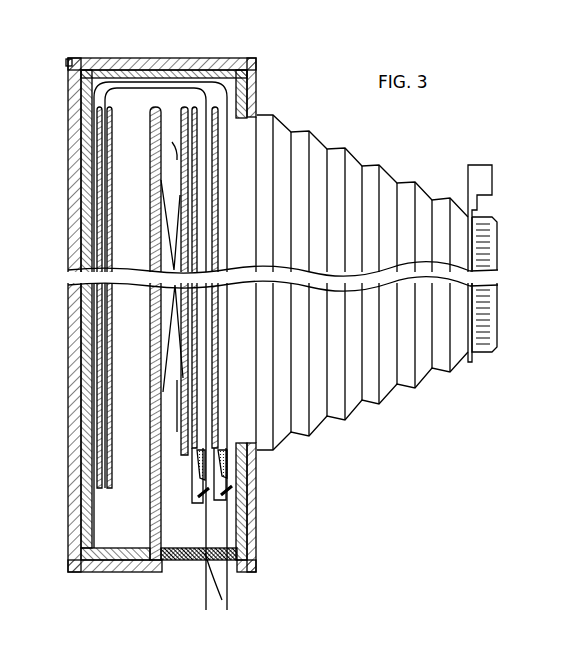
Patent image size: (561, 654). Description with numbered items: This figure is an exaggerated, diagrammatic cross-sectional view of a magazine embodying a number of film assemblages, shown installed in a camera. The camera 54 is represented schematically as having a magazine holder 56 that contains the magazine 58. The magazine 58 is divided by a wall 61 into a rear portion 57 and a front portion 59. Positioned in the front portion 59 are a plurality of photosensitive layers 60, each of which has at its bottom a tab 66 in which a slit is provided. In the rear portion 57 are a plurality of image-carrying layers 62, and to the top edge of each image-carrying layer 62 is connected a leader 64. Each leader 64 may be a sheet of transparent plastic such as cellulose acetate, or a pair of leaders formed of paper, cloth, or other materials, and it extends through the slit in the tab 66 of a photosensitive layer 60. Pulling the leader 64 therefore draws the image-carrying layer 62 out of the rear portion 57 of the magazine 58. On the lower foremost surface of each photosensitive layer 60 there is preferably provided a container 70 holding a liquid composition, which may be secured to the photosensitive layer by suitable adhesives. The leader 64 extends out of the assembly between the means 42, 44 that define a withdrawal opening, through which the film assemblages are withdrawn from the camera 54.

The means defining a withdrawal opening 42 is at (193, 553).
The means defining a withdrawal opening 44 is at (198, 550).
The camera 54 is at (405, 378).
The magazine holder 56 is at (257, 516).
The rear portion 57 is at (126, 187).
The magazine 58 is at (85, 318).
The front portion 59 is at (171, 100).
The photosensitive layers 60 is at (193, 203).
The wall 61 is at (150, 134).
The image-carrying layers 62 is at (101, 238).
The leader 64 is at (200, 157).
The tab 66 is at (232, 491).
The container 70 is at (218, 448).